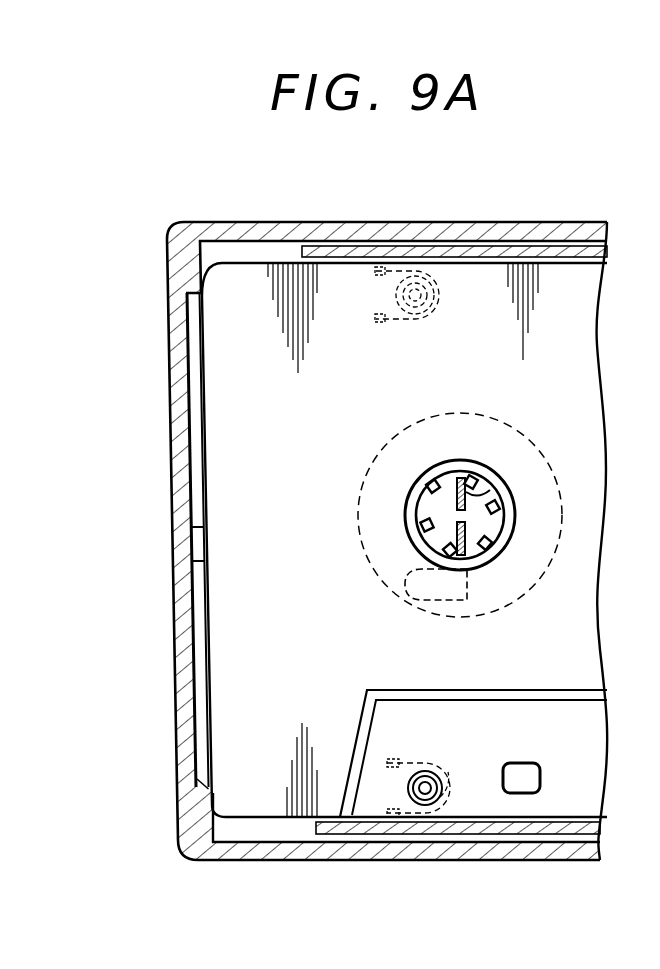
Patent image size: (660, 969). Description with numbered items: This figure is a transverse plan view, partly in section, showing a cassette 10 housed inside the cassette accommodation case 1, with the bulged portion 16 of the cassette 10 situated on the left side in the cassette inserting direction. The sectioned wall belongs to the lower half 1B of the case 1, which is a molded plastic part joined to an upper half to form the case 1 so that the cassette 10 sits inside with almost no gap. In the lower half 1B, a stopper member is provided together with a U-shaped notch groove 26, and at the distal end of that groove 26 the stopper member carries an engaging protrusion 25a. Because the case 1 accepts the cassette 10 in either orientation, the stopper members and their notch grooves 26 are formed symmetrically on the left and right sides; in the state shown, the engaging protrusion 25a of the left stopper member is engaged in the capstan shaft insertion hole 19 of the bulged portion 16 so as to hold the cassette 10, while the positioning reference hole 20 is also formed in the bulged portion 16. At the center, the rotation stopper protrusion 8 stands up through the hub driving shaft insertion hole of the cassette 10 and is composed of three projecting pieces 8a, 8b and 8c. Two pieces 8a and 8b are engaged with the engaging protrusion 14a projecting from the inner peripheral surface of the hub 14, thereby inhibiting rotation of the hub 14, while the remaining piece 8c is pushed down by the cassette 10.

The cassette accommodation case 1 is at (170, 405).
The lower half 1B is at (181, 482).
The cassette 10 is at (223, 600).
The rotation stopper protrusion 8 is at (291, 473).
The projecting piece 8a is at (457, 500).
The projecting piece 8b is at (458, 532).
The projecting piece 8c is at (405, 587).
The hub 14 is at (462, 412).
The engaging protrusion 14a is at (497, 497).
The bulged portion 16 is at (573, 795).
The capstan shaft insertion hole 19 is at (437, 793).
The positioning reference hole 20 is at (513, 780).
The engaging protrusion 25a is at (420, 276).
The U-shaped notch groove 26 is at (387, 268).